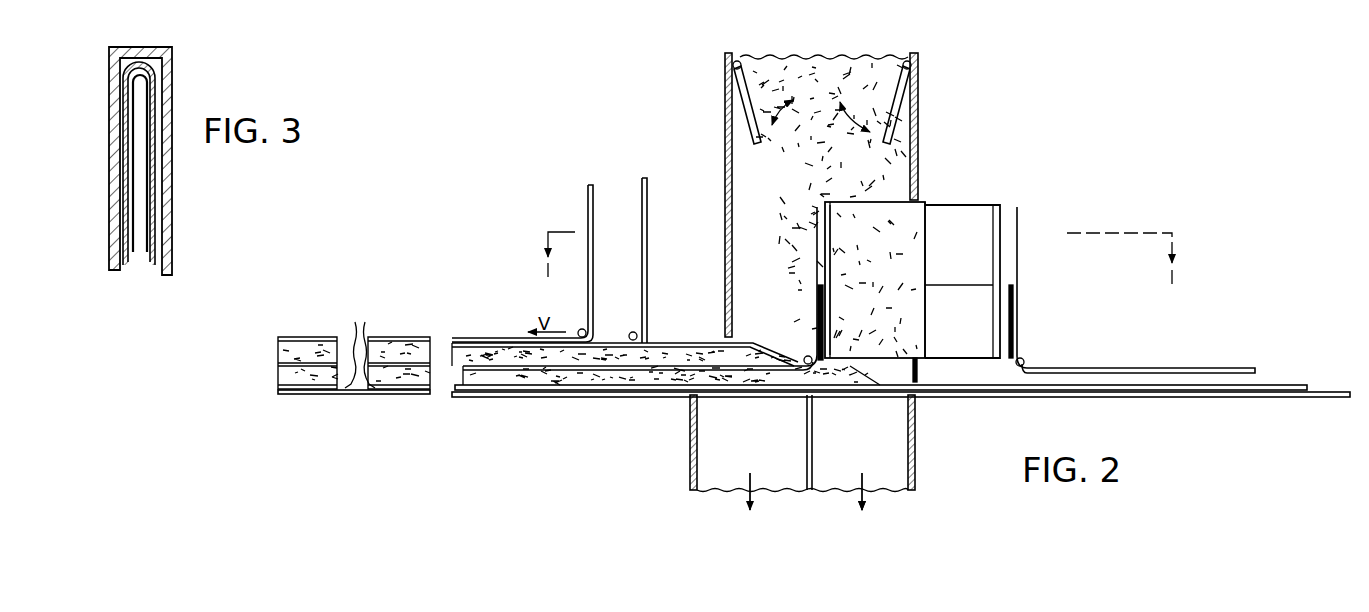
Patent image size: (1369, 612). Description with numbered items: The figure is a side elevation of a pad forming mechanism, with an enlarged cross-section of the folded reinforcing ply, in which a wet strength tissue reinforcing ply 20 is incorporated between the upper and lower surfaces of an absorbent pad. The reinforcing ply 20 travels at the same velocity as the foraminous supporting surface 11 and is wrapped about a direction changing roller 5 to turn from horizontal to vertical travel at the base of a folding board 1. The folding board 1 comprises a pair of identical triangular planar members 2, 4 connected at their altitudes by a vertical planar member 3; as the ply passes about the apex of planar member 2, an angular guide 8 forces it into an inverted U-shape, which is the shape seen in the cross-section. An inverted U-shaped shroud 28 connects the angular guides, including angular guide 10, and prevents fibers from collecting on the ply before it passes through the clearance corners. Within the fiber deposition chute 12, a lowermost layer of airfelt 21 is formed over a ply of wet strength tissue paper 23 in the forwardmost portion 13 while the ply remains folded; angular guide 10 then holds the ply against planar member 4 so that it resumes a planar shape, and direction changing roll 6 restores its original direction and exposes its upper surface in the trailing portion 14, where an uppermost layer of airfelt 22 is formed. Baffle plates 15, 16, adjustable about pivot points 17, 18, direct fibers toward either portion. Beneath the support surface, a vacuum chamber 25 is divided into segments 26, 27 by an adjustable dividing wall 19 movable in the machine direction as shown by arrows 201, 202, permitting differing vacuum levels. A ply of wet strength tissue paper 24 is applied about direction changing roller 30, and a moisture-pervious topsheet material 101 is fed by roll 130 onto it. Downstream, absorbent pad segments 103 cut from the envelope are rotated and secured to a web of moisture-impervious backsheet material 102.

In FIG. 2, the folding board 1 is at (964, 197).
In FIG. 2, the triangular planar member 2 is at (1015, 312).
In FIG. 3, the vertical planar member 3 is at (143, 87).
In FIG. 2, the vertical planar member 3 is at (878, 185).
In FIG. 2, the triangular planar member 4 is at (825, 313).
In FIG. 2, the direction changing roller 5 is at (1024, 360).
In FIG. 2, the direction changing roll 6 is at (803, 356).
In FIG. 2, the angular guide 8 is at (1002, 207).
In FIG. 2, the angular guide 10 is at (830, 226).
In FIG. 2, the foraminous supporting surface 11 is at (1332, 392).
In FIG. 2, the fiber deposition chute 12 is at (934, 76).
In FIG. 2, the forwardmost portion of the fiber deposition chute 13 is at (872, 156).
In FIG. 2, the trailing portion of the fiber deposition chute 14 is at (778, 172).
In FIG. 2, the baffle plate 15 is at (893, 115).
In FIG. 2, the baffle plate 16 is at (740, 99).
In FIG. 2, the pivot point 17 is at (905, 60).
In FIG. 2, the pivot point 18 is at (741, 61).
In FIG. 2, the adjustable dividing wall 19 is at (803, 473).
In FIG. 3, the reinforcing ply 20 is at (157, 115).
In FIG. 2, the reinforcing ply 20 is at (1207, 368).
In FIG. 2, the lowermost layer of airfelt 21 is at (523, 375).
In FIG. 2, the uppermost layer of airfelt 22 is at (505, 353).
In FIG. 2, the ply of wet strength tissue paper 23 is at (1288, 385).
In FIG. 2, the ply of wet strength tissue paper 24 is at (647, 275).
In FIG. 2, the vacuum chamber 25 is at (674, 450).
In FIG. 2, the vacuum chamber segment 26 is at (900, 448).
In FIG. 2, the vacuum chamber segment 27 is at (702, 465).
In FIG. 3, the inverted U-shaped shroud 28 is at (170, 148).
In FIG. 2, the inverted U-shaped shroud 28 is at (925, 202).
In FIG. 2, the direction changing roller 30 is at (630, 333).
In FIG. 2, the moisture-pervious topsheet material 101 is at (588, 208).
In FIG. 2, the moisture-impervious backsheet material 102 is at (410, 394).
In FIG. 2, the absorbent pad segment 103 is at (357, 342).
In FIG. 2, the roll 130 is at (580, 330).
In FIG. 2, the arrow 201 is at (778, 411).
In FIG. 2, the arrow 202 is at (843, 427).